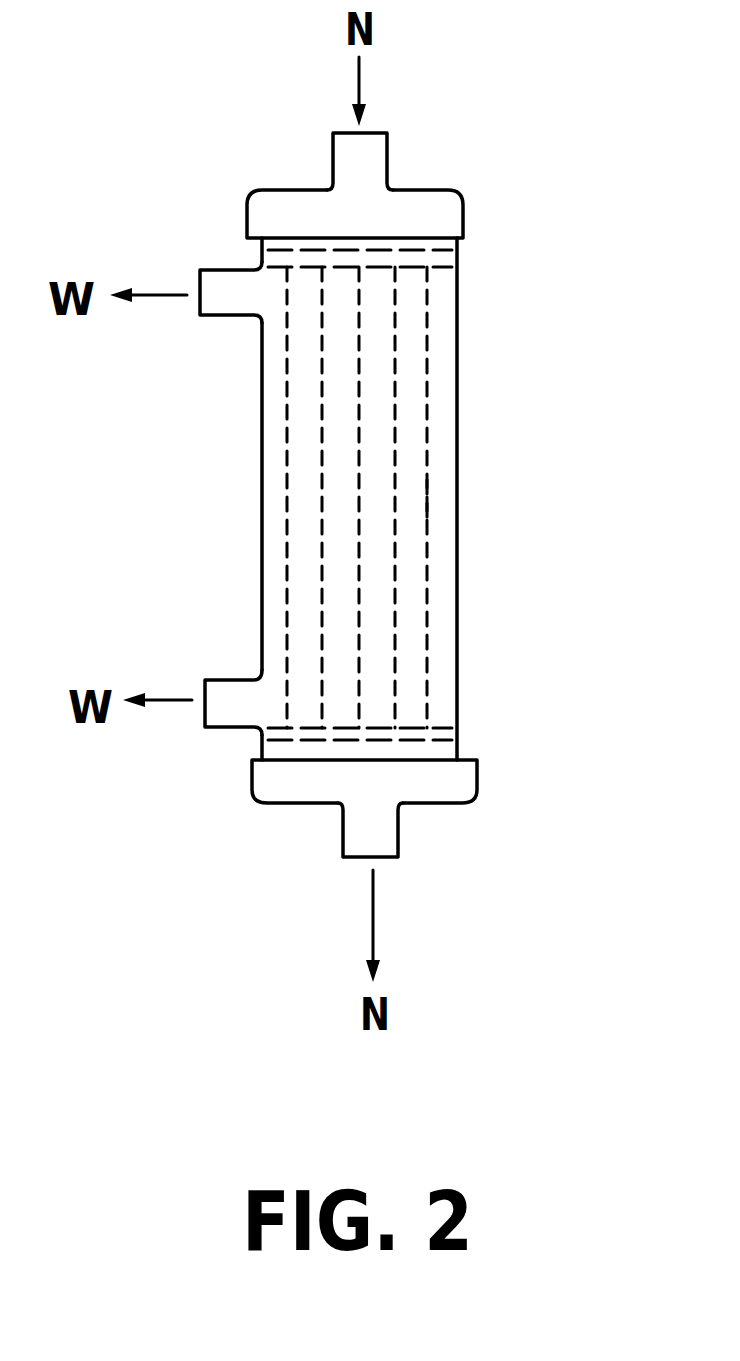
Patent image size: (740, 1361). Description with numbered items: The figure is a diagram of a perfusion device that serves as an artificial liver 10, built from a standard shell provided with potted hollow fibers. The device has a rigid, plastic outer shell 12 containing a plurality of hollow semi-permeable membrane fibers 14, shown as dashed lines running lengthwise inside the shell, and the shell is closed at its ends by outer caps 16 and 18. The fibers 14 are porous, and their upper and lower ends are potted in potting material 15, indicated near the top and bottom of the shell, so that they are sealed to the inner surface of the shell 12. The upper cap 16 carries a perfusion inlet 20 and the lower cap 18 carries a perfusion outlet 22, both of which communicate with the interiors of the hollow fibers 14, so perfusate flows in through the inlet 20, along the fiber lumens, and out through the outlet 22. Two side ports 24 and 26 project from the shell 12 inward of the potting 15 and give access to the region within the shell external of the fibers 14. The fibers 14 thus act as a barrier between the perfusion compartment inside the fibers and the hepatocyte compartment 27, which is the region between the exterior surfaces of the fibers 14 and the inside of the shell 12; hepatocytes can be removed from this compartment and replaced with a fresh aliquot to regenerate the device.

The artificial liver 10 is at (252, 132).
The outer shell 12 is at (262, 475).
The hollow semi-permeable membrane fibers 14 is at (427, 380).
The potting material 15 is at (457, 255).
The outer cap 16 is at (460, 197).
The outer cap 18 is at (475, 787).
The perfusion inlet 20 is at (397, 140).
The perfusion outlet 22 is at (398, 840).
The port 24 is at (215, 268).
The port 26 is at (243, 677).
The hepatocyte compartment 27 is at (447, 493).